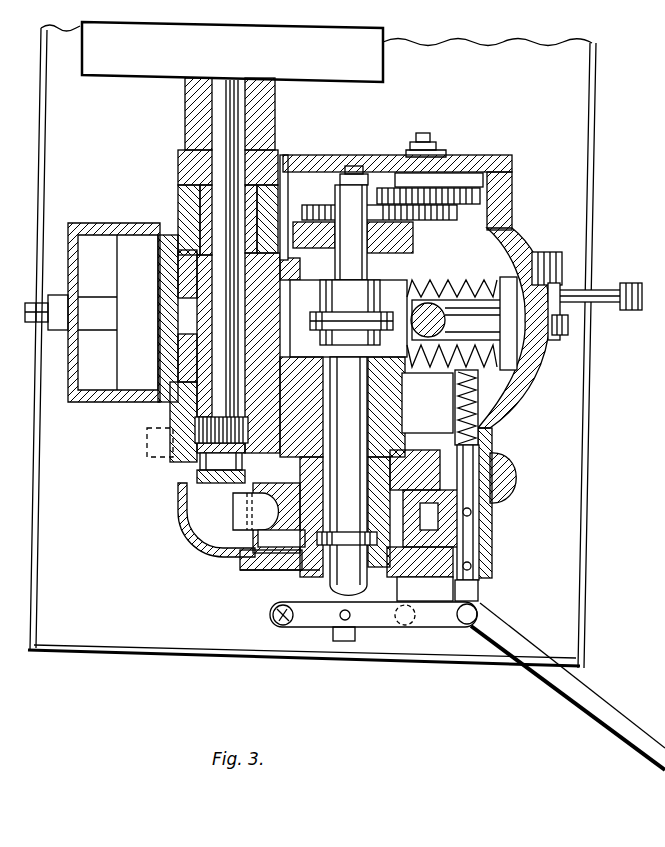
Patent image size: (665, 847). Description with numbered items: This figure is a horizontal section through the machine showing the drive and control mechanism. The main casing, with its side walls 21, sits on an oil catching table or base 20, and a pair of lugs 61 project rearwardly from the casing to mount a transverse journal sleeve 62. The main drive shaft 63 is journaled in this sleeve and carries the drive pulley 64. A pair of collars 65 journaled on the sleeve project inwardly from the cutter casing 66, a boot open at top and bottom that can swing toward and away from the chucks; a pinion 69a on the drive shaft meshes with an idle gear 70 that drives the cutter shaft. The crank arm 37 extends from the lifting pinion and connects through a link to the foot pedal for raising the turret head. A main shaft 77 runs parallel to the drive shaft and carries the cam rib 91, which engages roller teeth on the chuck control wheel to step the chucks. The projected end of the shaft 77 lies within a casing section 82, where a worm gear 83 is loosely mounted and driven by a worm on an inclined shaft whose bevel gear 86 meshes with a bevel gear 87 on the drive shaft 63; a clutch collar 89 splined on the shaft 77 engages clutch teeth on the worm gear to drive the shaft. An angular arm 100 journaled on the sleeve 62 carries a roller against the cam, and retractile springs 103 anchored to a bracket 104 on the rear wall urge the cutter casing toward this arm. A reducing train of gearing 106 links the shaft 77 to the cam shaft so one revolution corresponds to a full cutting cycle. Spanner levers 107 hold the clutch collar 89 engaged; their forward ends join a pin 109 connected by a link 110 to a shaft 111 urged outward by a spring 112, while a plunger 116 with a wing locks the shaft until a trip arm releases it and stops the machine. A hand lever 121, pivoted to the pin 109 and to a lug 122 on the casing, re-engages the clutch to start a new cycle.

The oil catching table or base 20 is at (50, 520).
The side walls 21 is at (530, 240).
The crank arm 37 is at (607, 305).
The lugs 61 is at (178, 280).
The journal sleeve 62 is at (203, 160).
The main drive shaft 63 is at (230, 115).
The drive pulley 64 is at (358, 67).
The collars 65 is at (185, 200).
The cutter casing 66 is at (98, 372).
The pinion 69a is at (197, 470).
The idle gear 70 is at (143, 445).
The main shaft 77 is at (233, 497).
The casing section 82 is at (263, 568).
The worm gear 83 is at (440, 518).
The bevel gear 86 is at (219, 552).
The bevel gear 87 is at (240, 503).
The clutch collar 89 is at (240, 570).
The cam rib 91 is at (307, 320).
The angular arm 100 is at (190, 307).
The retractile springs 103 is at (523, 312).
The bracket 104 is at (555, 285).
The reducing train of gearing 106 is at (457, 192).
The spanner levers 107 is at (307, 622).
The pin 109 is at (457, 618).
The link 110 is at (478, 595).
The shaft 111 is at (480, 568).
The spring 112 is at (477, 415).
The plunger 116 is at (512, 477).
The hand lever 121 is at (616, 722).
The lug 122 is at (408, 598).